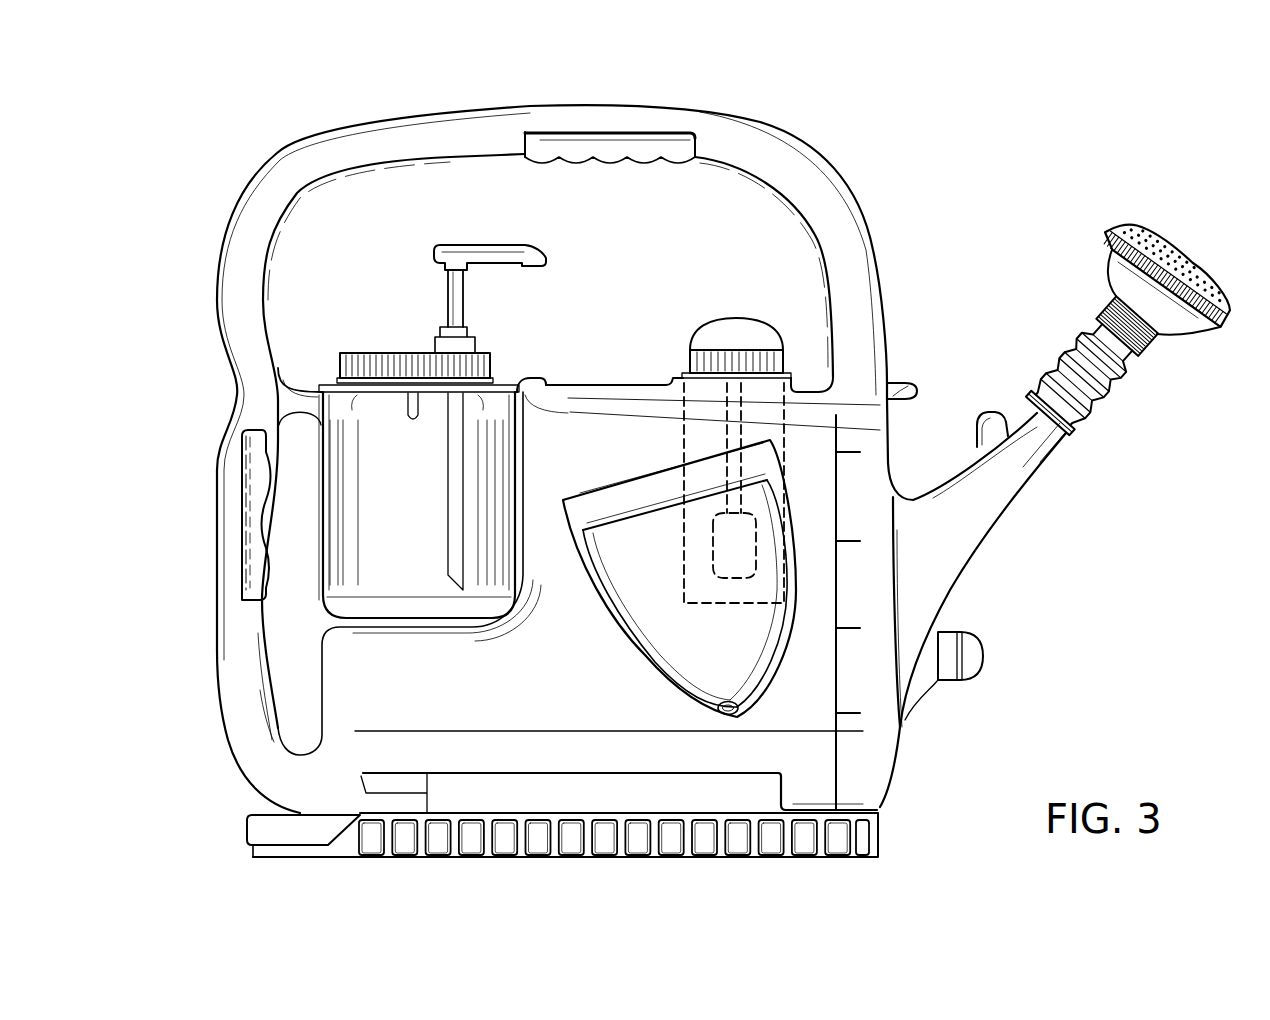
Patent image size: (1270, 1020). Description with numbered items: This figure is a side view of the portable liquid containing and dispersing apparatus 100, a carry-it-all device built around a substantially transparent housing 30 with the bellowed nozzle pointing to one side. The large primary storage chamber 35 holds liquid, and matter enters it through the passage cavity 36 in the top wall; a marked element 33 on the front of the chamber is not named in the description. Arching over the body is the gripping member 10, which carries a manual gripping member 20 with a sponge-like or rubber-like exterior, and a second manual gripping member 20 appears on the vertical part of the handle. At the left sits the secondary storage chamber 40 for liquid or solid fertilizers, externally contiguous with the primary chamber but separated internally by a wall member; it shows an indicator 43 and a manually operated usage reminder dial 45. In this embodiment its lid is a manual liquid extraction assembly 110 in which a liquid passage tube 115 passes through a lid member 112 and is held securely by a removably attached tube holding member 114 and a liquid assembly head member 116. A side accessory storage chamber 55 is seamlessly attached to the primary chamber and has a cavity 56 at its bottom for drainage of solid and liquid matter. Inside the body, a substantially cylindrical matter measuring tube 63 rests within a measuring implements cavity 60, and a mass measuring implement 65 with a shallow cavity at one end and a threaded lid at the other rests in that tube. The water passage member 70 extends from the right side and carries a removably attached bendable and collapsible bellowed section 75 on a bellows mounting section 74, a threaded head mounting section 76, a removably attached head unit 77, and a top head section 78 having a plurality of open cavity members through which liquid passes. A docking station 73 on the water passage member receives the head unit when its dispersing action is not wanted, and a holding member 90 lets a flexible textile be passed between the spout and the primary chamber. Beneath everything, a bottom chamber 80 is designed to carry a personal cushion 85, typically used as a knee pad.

The gripping member 10 is at (352, 127).
The manual gripping member 20 is at (573, 163).
The substantially transparent housing 30 is at (543, 387).
The volume indicia 33 is at (838, 783).
The primary storage chamber 35 is at (570, 442).
The passage cavity 36 is at (650, 385).
The secondary storage chamber 40 is at (367, 485).
The indicator 43 is at (407, 420).
The usage reminder dial 45 is at (330, 380).
The side accessory storage chamber 55 is at (633, 647).
The drainage cavity 56 is at (745, 718).
The measuring implements cavity 60 is at (792, 393).
The matter measuring tube 63 is at (683, 440).
The mass measuring implement 65 is at (700, 330).
The water passage member 70 is at (987, 543).
The docking station 73 is at (973, 633).
The bellows mounting section 74 is at (1053, 447).
The bellowed section 75 is at (1113, 378).
The threaded head mounting section 76 is at (1098, 325).
The head unit 77 is at (1118, 268).
The top head section 78 is at (1112, 225).
The bottom chamber 80 is at (703, 800).
The personal cushion 85 is at (316, 833).
The holding member 90 is at (985, 412).
The portable liquid containing and dispersing apparatus 100 is at (912, 130).
The manual liquid extraction assembly 110 is at (357, 353).
The lid member 112 is at (477, 366).
The tube holding member 114 is at (435, 342).
The liquid passage tube 115 is at (450, 520).
The liquid assembly head member 116 is at (458, 245).